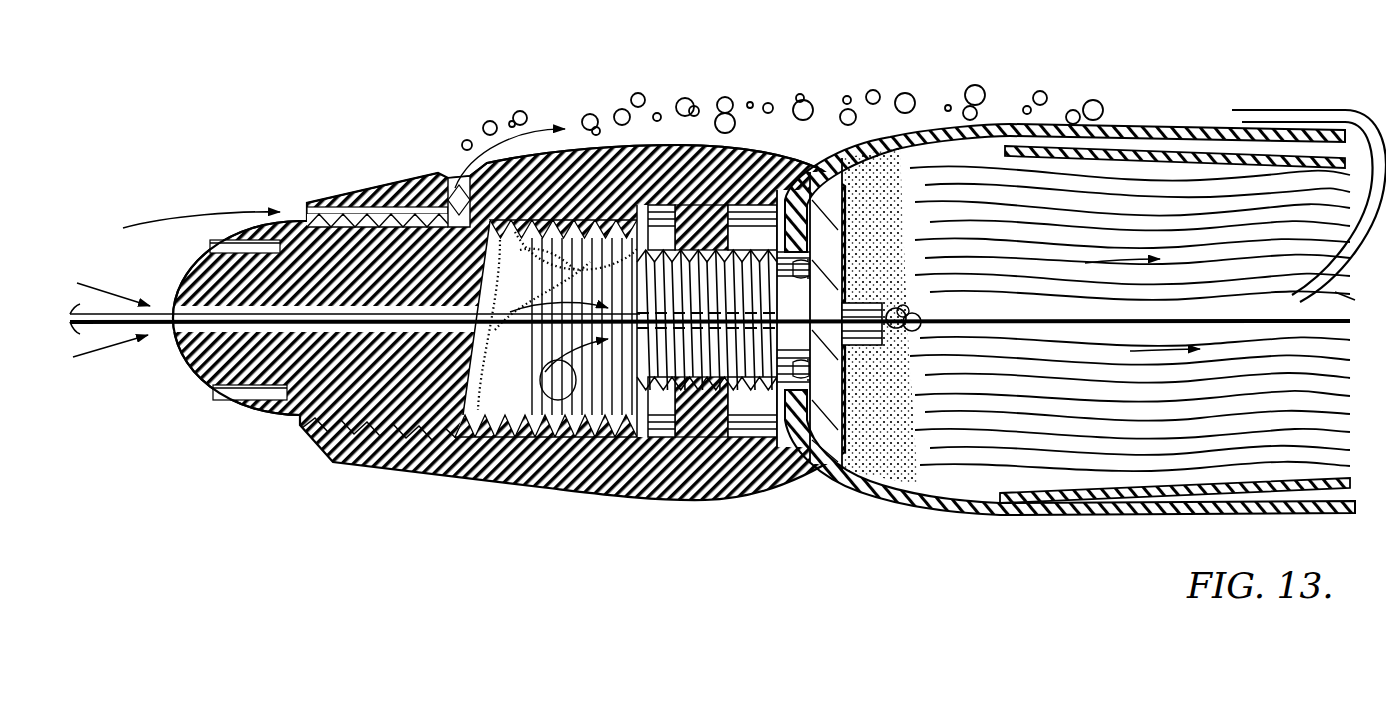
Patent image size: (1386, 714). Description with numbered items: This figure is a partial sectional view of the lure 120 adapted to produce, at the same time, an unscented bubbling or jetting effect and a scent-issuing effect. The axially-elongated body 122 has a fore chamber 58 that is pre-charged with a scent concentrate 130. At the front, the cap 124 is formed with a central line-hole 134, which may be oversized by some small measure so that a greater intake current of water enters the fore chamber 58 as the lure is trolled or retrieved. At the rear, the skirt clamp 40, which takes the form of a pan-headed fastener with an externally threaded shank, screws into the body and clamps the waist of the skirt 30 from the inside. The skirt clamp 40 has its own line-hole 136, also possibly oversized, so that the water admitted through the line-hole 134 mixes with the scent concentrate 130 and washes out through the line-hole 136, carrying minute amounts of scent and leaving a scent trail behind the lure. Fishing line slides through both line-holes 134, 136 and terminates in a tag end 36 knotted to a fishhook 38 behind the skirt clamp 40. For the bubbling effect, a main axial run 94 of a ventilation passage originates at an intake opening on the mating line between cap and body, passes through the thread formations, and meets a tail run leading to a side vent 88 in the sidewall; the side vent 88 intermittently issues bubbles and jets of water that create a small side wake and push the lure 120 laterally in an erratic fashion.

The lure 120 is at (350, 132).
The body 122 is at (519, 150).
The side vent 88 is at (455, 185).
The main axial run of the ventilation passage 94 is at (318, 200).
The cap 124 is at (197, 286).
The line-hole 134 is at (178, 350).
The scent concentrate 130 is at (543, 225).
The fore chamber 58 is at (590, 400).
The line-hole 136 is at (714, 478).
The skirt clamp 40 is at (827, 473).
The skirt 30 is at (876, 131).
The tag end 36 is at (893, 308).
The fishhook 38 is at (1296, 122).